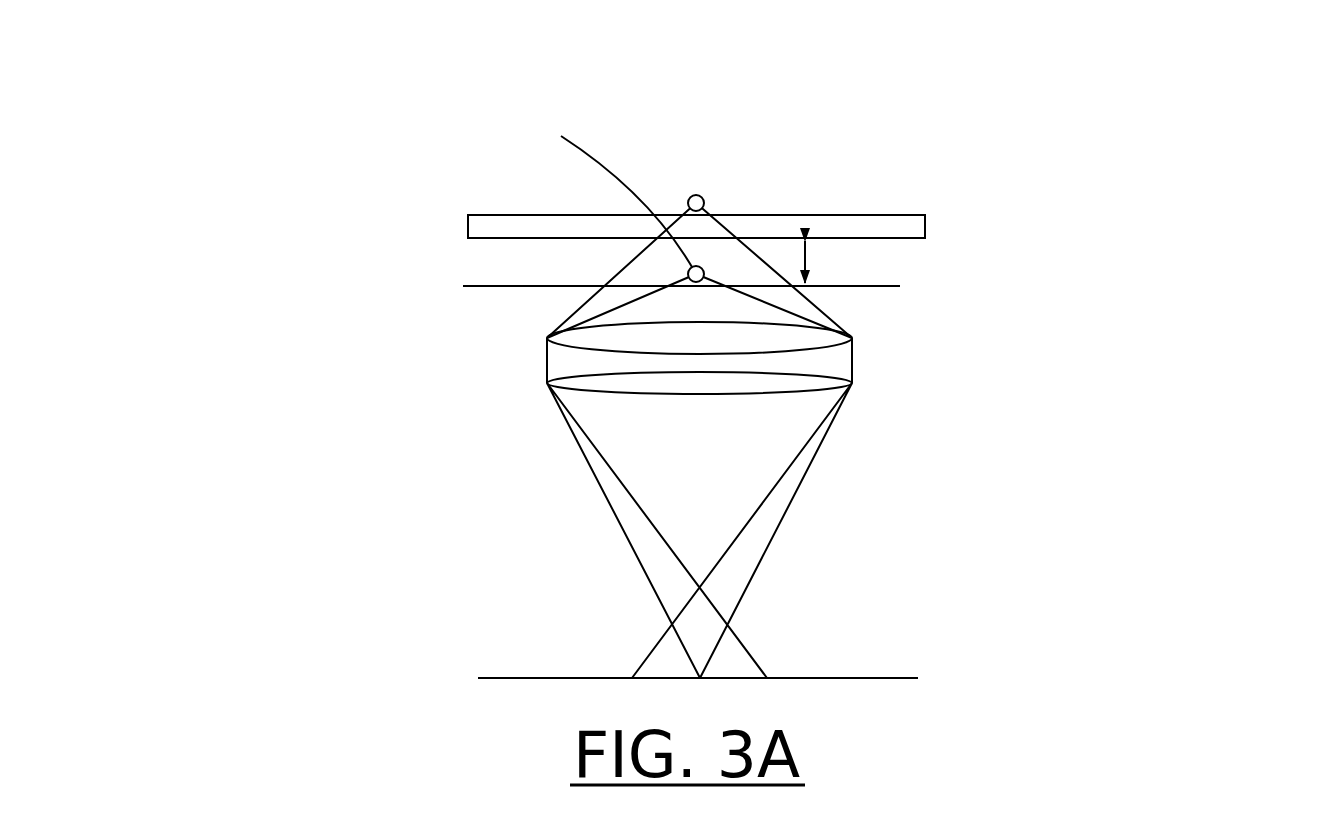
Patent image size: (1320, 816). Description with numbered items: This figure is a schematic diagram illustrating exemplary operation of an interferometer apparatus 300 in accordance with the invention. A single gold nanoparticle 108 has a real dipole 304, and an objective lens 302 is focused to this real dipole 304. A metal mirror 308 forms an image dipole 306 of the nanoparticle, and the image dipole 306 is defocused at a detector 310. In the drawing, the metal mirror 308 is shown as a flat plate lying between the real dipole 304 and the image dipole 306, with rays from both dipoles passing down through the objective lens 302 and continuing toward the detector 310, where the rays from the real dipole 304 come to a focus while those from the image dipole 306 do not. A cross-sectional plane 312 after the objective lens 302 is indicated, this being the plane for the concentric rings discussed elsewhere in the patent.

The interferometer apparatus 300 is at (716, 48).
The single gold nanoparticle 108 is at (604, 197).
The objective lens 302 is at (545, 387).
The real dipole 304 is at (709, 268).
The image dipole 306 is at (705, 195).
The metal mirror 308 is at (927, 227).
The detector 310 is at (833, 678).
The cross-sectional plane 312 is at (867, 363).